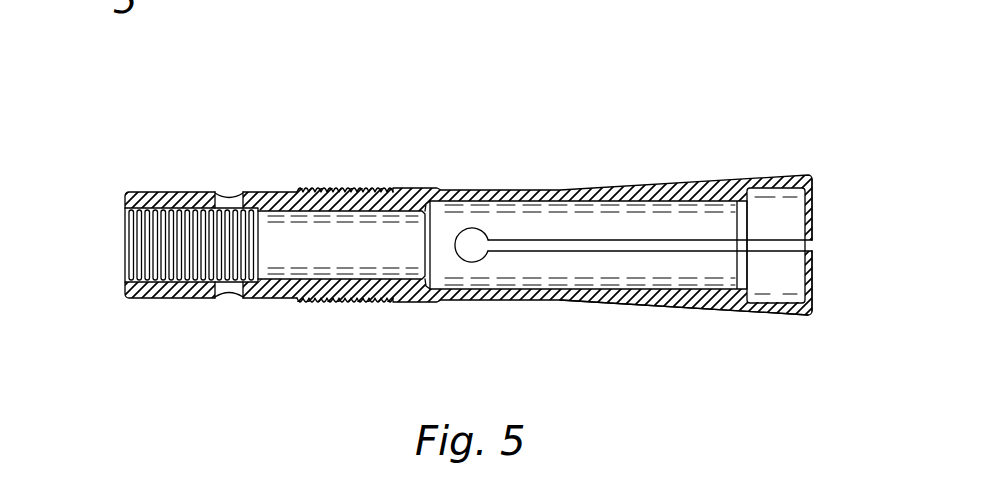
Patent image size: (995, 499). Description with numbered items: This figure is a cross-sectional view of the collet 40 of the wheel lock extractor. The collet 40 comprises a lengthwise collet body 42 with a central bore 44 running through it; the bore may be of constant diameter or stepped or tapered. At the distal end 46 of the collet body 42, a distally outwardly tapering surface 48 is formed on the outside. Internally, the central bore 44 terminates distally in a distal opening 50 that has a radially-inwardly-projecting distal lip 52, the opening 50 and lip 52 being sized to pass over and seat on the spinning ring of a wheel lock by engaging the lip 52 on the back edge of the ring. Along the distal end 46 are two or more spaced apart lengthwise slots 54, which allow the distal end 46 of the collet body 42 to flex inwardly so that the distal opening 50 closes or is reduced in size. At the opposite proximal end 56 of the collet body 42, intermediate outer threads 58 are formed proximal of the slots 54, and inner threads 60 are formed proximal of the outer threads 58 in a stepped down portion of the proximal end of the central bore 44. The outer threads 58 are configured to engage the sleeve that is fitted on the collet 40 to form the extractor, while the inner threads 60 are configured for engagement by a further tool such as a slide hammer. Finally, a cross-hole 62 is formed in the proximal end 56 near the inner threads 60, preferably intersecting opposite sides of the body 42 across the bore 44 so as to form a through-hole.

The collet 40 is at (666, 65).
The collet body 42 is at (493, 102).
The central bore 44 is at (387, 233).
The distal end 46 is at (719, 109).
The distally outwardly tapering surface 48 is at (652, 305).
The distal opening 50 is at (838, 287).
The distal lip 52 is at (808, 190).
The lengthwise slots 54 is at (548, 248).
The proximal end 56 is at (271, 145).
The outer threads 58 is at (322, 304).
The inner threads 60 is at (155, 250).
The cross-hole 62 is at (230, 192).